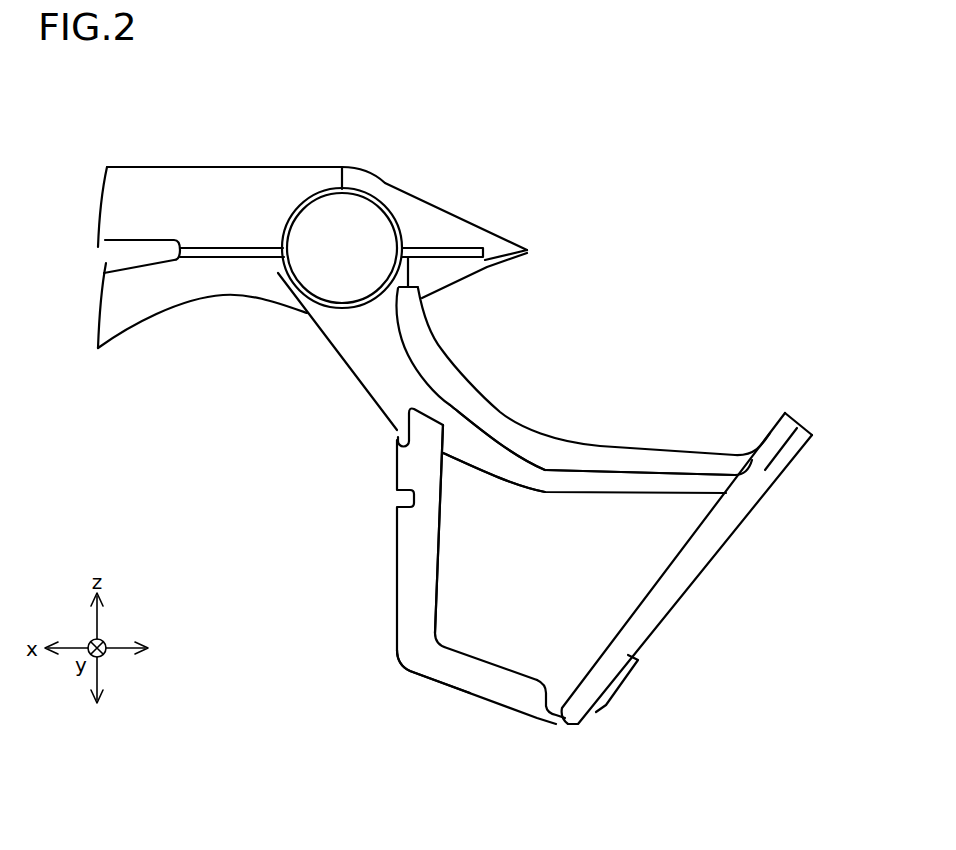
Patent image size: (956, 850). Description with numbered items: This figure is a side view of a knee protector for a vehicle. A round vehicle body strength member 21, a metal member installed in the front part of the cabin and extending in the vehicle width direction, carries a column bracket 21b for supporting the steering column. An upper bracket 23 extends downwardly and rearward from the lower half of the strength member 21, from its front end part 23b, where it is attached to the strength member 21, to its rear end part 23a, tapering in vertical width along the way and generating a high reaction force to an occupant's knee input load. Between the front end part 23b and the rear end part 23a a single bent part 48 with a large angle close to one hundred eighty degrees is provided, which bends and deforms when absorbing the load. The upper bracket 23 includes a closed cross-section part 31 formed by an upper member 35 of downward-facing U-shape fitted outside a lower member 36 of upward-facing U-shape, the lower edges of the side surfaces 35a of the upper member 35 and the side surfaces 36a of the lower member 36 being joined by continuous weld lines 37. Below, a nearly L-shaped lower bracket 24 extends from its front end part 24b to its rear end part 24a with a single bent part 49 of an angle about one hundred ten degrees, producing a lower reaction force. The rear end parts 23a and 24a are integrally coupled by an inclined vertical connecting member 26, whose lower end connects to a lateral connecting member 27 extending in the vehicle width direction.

The vehicle body strength member 21 is at (393, 201).
The column bracket 21b is at (224, 166).
The upper bracket 23 is at (552, 522).
The closed cross-section part 31 is at (552, 522).
The rear end part of the upper bracket 23a is at (786, 413).
The front end part of the upper bracket 23b is at (335, 308).
The lower bracket 24 is at (416, 598).
The rear end part of the lower bracket 24a is at (548, 722).
The front end part of the lower bracket 24b is at (400, 428).
The vertical connecting member 26 is at (718, 539).
The lateral connecting member 27 is at (603, 703).
The upper member 35 is at (475, 370).
The side surfaces of the upper member 35a is at (488, 420).
The lower member 36 is at (467, 477).
The side surfaces of the lower member 36a is at (505, 473).
The weld lines 37 is at (413, 370).
The bent part of the upper bracket 48 is at (548, 427).
The bent part of the lower bracket 49 is at (378, 660).